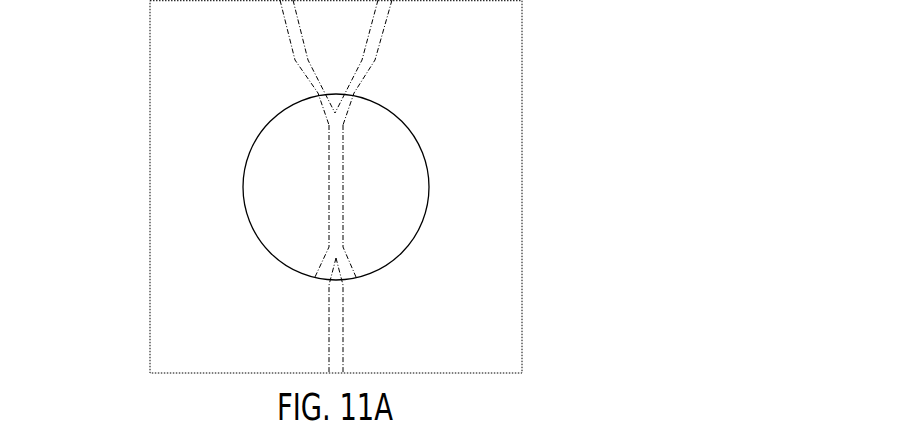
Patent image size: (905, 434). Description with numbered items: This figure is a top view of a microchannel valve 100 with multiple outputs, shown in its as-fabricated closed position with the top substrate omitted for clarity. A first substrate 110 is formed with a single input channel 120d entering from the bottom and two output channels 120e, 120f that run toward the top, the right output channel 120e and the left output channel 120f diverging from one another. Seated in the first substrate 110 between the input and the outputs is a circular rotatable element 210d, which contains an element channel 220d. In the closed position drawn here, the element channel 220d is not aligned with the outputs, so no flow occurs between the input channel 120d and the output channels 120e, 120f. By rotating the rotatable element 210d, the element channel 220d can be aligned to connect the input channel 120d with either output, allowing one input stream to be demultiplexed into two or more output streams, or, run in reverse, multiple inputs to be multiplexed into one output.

The microchannel valve 100 is at (562, 175).
The first substrate 110 is at (150, 121).
The input channel 120d is at (328, 317).
The right output channel 120e is at (380, 40).
The left output channel 120f is at (287, 40).
The rotatable element 210d is at (263, 192).
The element channel 220d is at (325, 254).